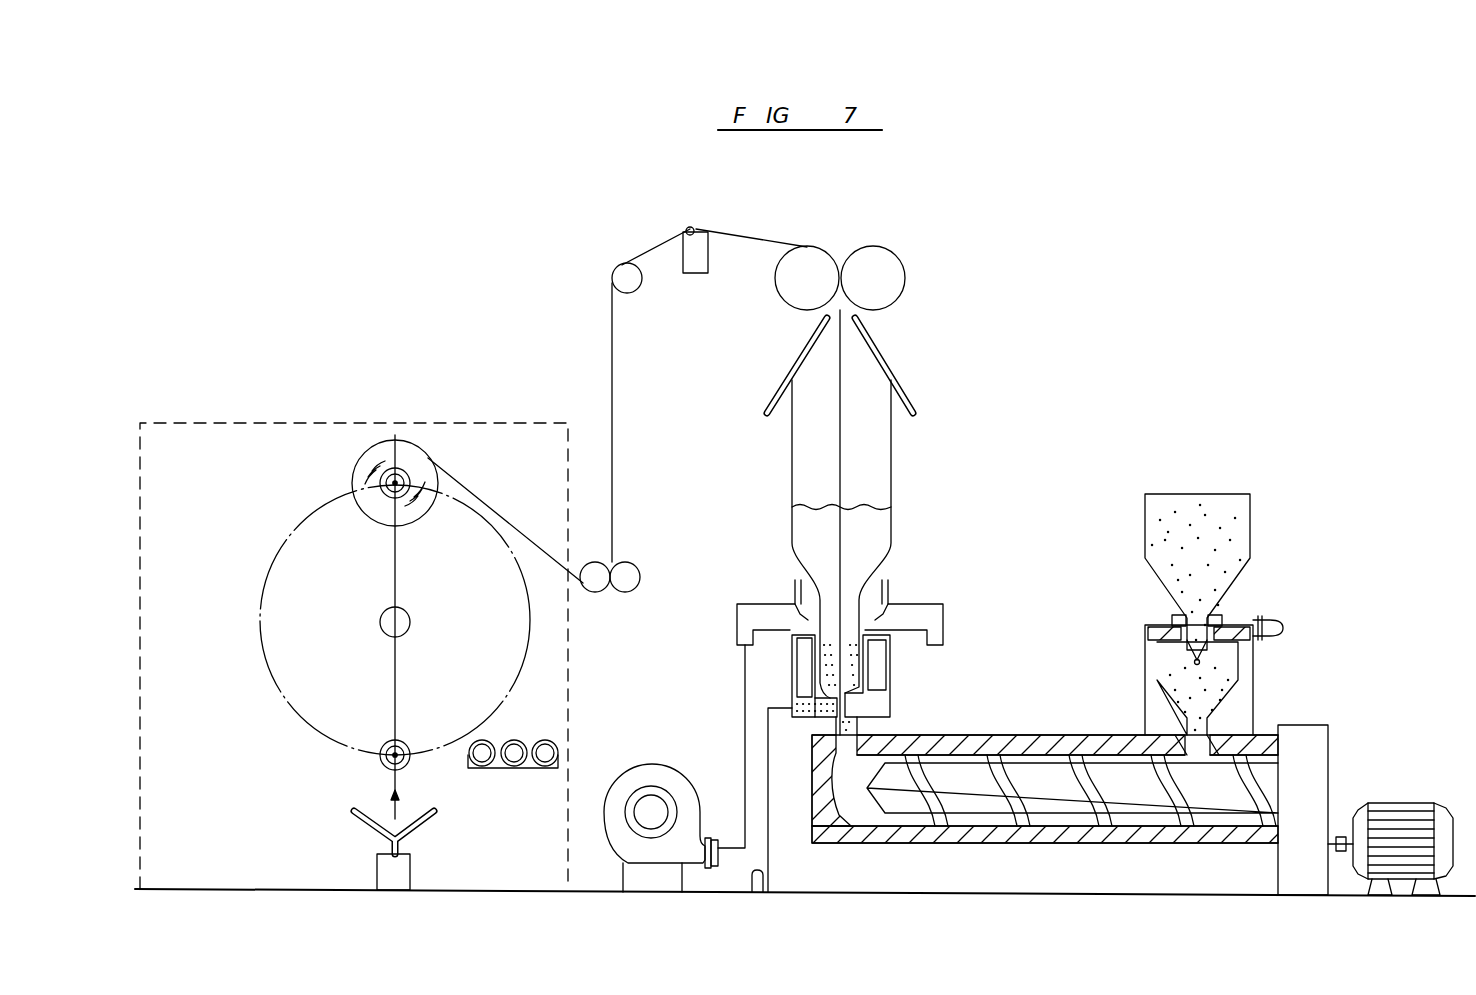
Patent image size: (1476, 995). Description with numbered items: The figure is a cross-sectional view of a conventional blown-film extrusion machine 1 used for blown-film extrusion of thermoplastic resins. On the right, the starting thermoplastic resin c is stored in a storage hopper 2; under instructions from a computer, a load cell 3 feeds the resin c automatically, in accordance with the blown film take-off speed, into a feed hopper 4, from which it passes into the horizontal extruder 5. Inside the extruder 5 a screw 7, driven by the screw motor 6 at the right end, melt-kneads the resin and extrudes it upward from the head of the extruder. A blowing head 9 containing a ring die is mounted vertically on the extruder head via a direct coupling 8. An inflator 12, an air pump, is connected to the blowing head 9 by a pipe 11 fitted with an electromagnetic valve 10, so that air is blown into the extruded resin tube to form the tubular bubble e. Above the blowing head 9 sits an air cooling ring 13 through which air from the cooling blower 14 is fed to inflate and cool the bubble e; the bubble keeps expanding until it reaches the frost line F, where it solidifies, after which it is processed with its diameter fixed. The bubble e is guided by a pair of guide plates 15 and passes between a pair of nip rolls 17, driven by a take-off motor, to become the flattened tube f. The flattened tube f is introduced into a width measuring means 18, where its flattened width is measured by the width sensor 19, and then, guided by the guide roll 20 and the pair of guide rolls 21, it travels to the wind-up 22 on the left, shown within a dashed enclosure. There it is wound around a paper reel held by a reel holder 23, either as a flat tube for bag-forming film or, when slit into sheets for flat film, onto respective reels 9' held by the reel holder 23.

The blown-film extrusion machine 1 is at (1052, 262).
The storage hopper 2 is at (1250, 500).
The thermoplastic resin c is at (1240, 535).
The load cell 3 is at (1190, 655).
The feed hopper 4 is at (1220, 680).
The extruder 5 is at (1068, 845).
The screw motor 6 is at (1408, 803).
The screw 7 is at (1045, 765).
The direct coupling 8 is at (857, 726).
The blowing head 9 is at (677, 581).
The bobbins 9' is at (484, 731).
The electromagnetic valve 10 is at (768, 772).
The pipe 11 is at (770, 845).
The inflator 12 is at (752, 895).
The air cooling ring 13 is at (943, 615).
The cooling blower 14 is at (645, 775).
The guide plates 15 is at (790, 370).
The nip rolls 17 is at (790, 278).
The width measuring means 18 is at (692, 273).
The width sensor 19 is at (696, 230).
The guide roll 20 is at (620, 270).
The guide rolls 21 is at (590, 590).
The wind-up 22 is at (428, 423).
The reel holder 23 is at (380, 483).
The tubular bubble e is at (891, 467).
The frost line F is at (891, 507).
The flattened tube f is at (372, 455).